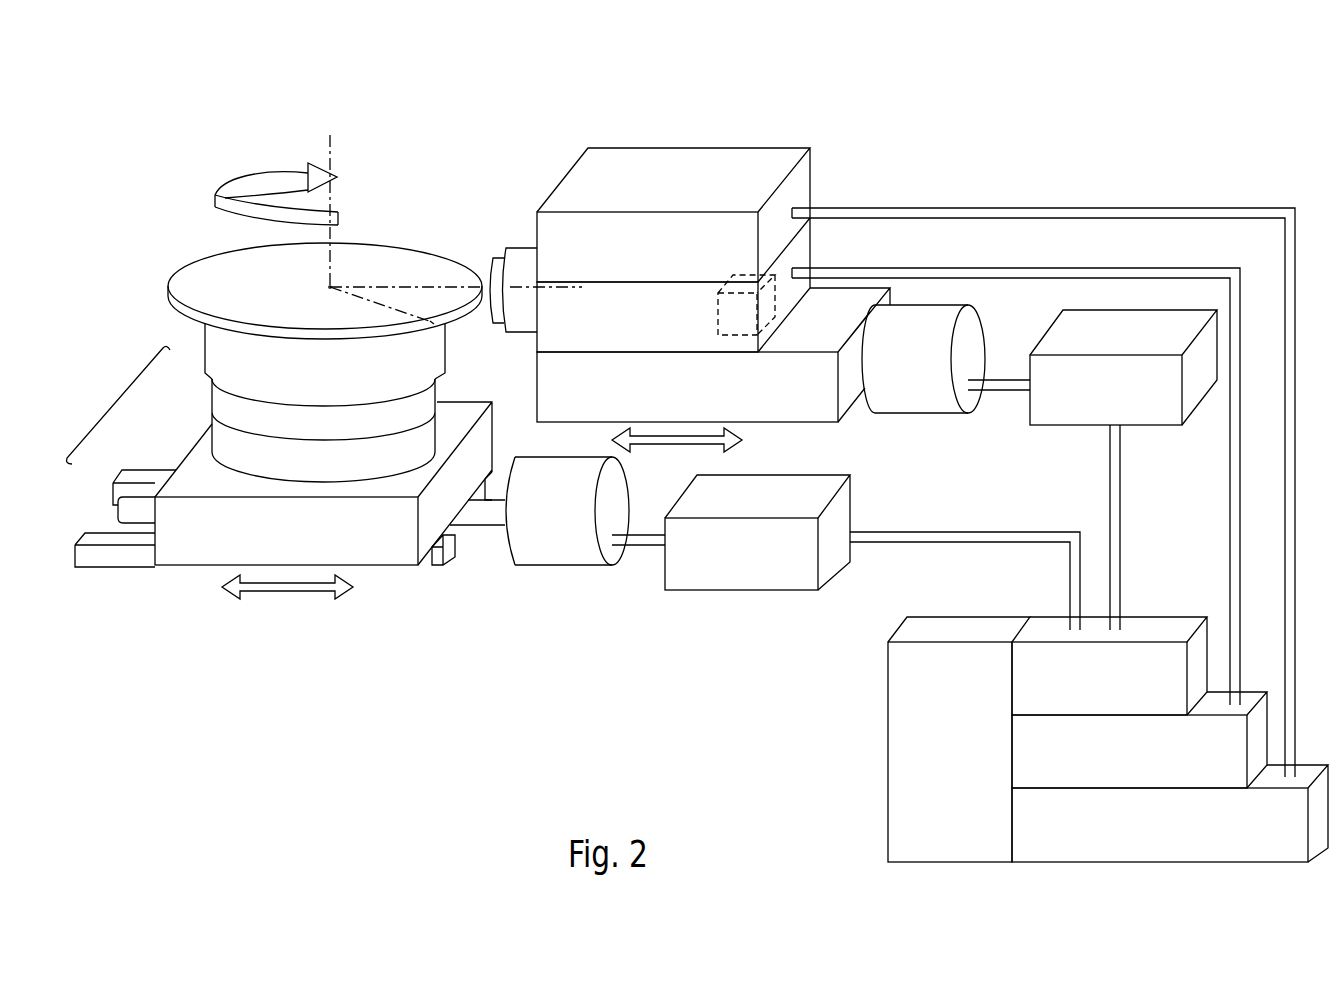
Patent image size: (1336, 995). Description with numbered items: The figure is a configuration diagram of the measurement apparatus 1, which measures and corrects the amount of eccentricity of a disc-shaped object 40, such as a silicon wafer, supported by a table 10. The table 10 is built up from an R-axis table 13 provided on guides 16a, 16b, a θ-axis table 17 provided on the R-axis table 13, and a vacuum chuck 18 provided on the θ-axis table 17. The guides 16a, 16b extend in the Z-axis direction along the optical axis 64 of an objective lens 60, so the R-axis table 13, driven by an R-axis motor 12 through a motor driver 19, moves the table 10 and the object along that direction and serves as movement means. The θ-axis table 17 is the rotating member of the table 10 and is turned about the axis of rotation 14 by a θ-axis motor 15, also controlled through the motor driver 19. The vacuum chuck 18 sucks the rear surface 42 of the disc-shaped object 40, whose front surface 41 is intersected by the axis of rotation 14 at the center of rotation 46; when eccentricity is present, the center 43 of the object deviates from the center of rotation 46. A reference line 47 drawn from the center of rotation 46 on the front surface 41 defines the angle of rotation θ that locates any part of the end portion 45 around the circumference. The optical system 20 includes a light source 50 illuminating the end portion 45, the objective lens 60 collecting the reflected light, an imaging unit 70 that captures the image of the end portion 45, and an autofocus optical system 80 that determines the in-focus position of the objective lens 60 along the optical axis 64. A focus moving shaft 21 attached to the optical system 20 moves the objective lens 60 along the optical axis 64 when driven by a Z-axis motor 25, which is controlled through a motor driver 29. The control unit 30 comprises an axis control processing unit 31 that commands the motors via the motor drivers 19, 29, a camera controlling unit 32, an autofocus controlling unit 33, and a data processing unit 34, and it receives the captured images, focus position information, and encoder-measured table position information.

The measurement apparatus 1 is at (1017, 140).
The table 10 is at (104, 396).
The R-axis motor 12 is at (558, 553).
The R-axis table 13 is at (190, 458).
The axis of rotation 14 is at (330, 145).
The θ-axis motor 15 is at (403, 458).
The guide 16a is at (100, 537).
The guide 16b is at (148, 478).
The θ-axis table 17 is at (213, 392).
The vacuum chuck 18 is at (218, 368).
The motor driver 19 is at (758, 590).
The optical system 20 is at (898, 182).
The focus moving shaft 21 is at (823, 408).
The Z-axis motor 25 is at (915, 411).
The motor driver 29 is at (1050, 412).
The control unit 30 is at (1178, 594).
The axis control processing unit 31 is at (1014, 670).
The camera controlling unit 32 is at (1014, 744).
The autofocus controlling unit 33 is at (1014, 819).
The data processing unit 34 is at (948, 670).
The disc-shaped object 40 is at (300, 288).
The front surface 41 is at (185, 282).
The rear surface 42 is at (180, 310).
The center 43 is at (322, 284).
The end portion 45 is at (438, 326).
The center of rotation 46 is at (340, 286).
The reference line 47 is at (380, 287).
The light source 50 is at (777, 317).
The objective lens 60 is at (525, 328).
The optical axis 64 is at (520, 286).
The imaging unit 70 is at (806, 248).
The autofocus optical system 80 is at (810, 192).